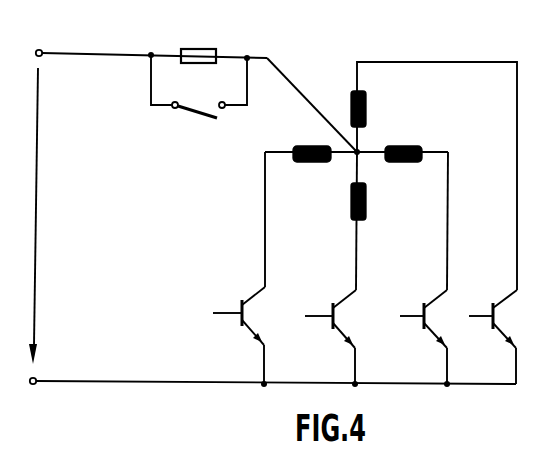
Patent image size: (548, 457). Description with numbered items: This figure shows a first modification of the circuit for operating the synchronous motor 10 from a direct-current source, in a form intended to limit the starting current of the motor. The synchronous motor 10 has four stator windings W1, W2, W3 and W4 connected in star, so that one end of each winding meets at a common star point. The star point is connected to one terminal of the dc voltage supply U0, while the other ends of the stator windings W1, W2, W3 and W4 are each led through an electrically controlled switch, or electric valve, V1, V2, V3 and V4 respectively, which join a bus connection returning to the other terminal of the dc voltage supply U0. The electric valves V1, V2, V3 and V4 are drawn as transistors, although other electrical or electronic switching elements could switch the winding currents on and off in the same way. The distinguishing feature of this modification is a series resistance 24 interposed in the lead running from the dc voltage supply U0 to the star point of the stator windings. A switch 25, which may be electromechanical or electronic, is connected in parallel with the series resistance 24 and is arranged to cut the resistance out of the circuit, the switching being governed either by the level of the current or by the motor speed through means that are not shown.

The synchronous motor 10 is at (406, 39).
The series resistance 24 is at (199, 48).
The switch 25 is at (197, 117).
The stator winding W1 is at (308, 163).
The stator winding W2 is at (366, 200).
The stator winding W3 is at (403, 147).
The stator winding W4 is at (351, 97).
The electrically controlled switch V1 is at (236, 322).
The electrically controlled switch V2 is at (328, 323).
The electrically controlled switch V3 is at (420, 323).
The electrically controlled switch V4 is at (490, 324).
The dc voltage supply U0 is at (54, 206).